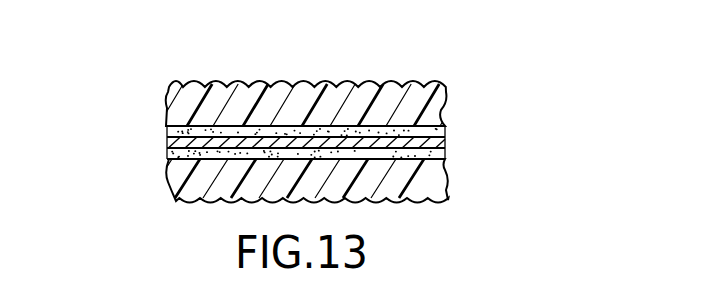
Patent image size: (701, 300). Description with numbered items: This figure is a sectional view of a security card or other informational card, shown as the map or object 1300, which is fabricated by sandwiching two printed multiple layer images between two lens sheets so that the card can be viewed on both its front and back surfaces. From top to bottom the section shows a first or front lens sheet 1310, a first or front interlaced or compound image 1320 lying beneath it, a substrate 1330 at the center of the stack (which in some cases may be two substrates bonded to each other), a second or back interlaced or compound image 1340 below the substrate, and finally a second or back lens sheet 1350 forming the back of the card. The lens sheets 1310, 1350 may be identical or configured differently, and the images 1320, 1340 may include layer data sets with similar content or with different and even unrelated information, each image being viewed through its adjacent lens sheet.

The map or object 1300 is at (115, 78).
The first or front lens sheet 1310 is at (445, 90).
The first or front interlaced or compound image 1320 is at (169, 133).
The substrate 1330 is at (445, 144).
The second or back interlaced or compound image 1340 is at (167, 157).
The second or back lens sheet 1350 is at (447, 188).